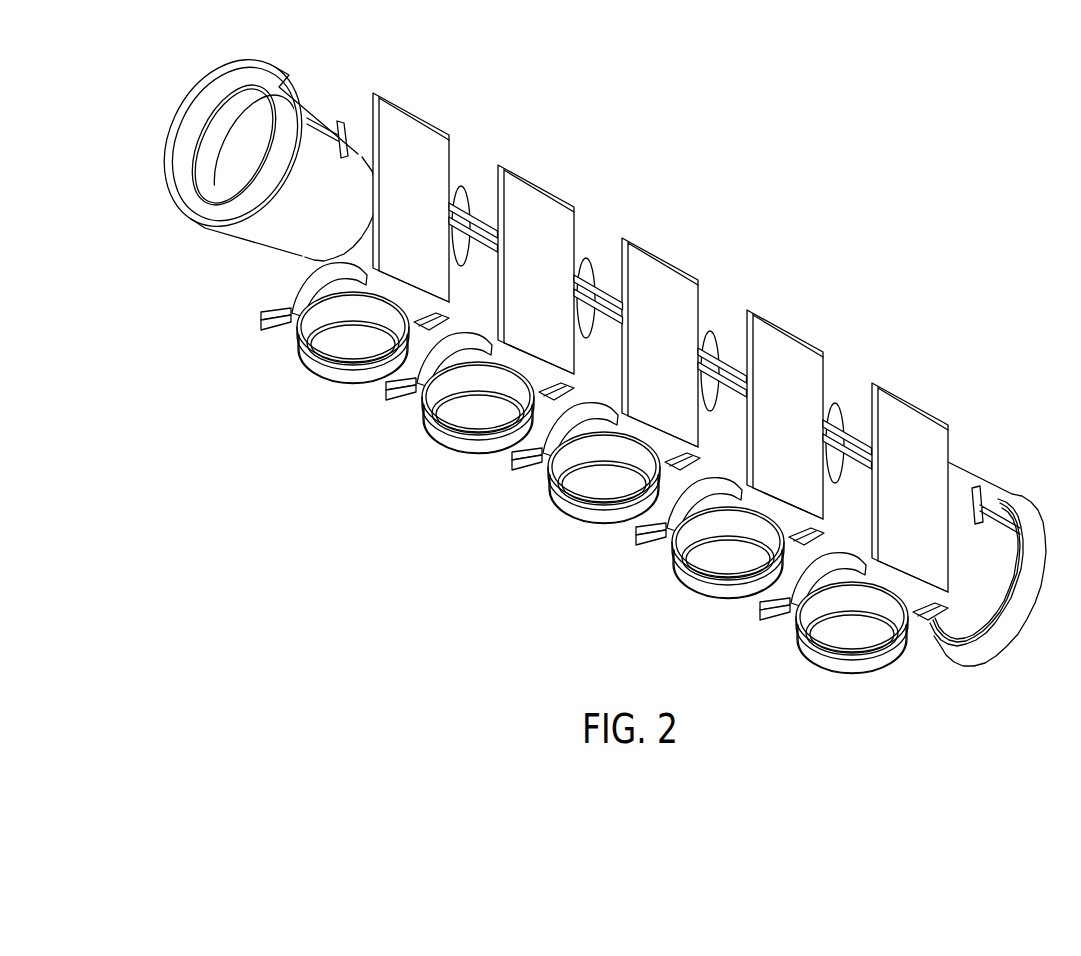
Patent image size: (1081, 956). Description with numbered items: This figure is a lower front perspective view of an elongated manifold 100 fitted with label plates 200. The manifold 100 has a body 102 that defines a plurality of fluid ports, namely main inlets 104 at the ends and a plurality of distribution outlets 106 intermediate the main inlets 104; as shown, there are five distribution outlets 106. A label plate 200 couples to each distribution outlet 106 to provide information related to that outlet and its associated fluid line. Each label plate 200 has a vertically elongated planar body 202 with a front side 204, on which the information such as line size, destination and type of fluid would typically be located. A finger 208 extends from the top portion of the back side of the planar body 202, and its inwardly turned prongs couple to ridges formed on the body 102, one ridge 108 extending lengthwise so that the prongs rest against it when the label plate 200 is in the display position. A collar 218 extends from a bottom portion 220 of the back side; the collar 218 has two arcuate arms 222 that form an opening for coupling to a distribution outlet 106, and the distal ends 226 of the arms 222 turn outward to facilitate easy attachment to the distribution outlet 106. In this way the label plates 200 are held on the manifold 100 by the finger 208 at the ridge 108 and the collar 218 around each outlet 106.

The manifold 100 is at (605, 366).
The body 102 is at (600, 331).
The main inlets 104 is at (204, 112).
The distribution outlets 106 is at (356, 371).
The ridge 108 is at (843, 432).
The label plate 200 is at (684, 318).
The planar body 202 is at (435, 145).
The front side 204 is at (557, 297).
The finger 208 is at (493, 210).
The collar 218 is at (279, 311).
The bottom portion 220 is at (930, 602).
The arcuate arms 222 is at (670, 545).
The distal ends 226 is at (398, 402).